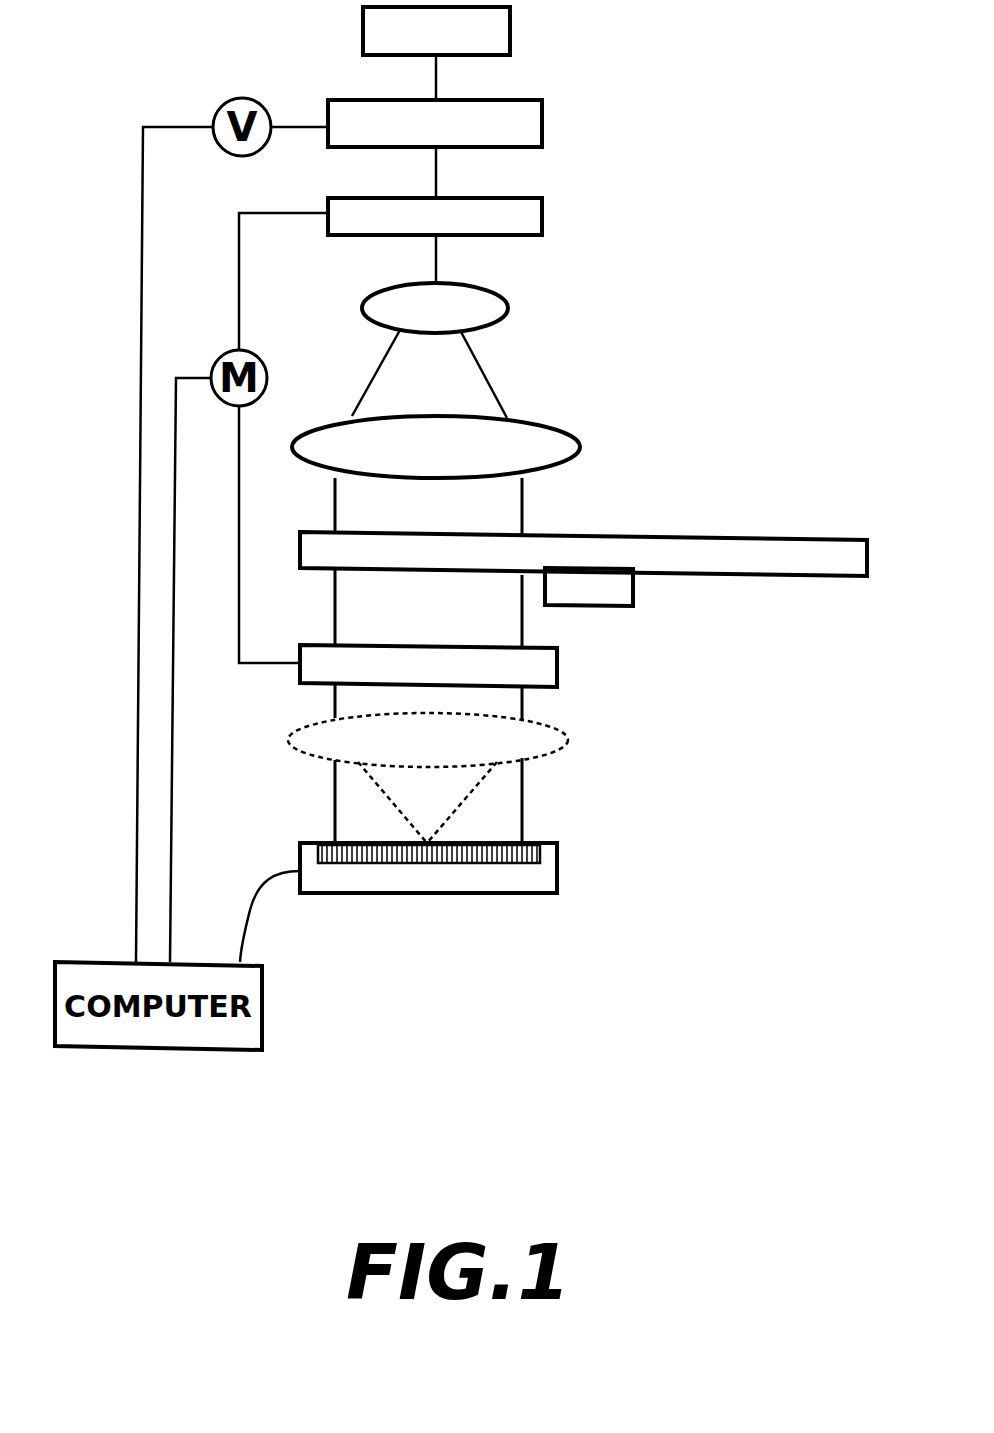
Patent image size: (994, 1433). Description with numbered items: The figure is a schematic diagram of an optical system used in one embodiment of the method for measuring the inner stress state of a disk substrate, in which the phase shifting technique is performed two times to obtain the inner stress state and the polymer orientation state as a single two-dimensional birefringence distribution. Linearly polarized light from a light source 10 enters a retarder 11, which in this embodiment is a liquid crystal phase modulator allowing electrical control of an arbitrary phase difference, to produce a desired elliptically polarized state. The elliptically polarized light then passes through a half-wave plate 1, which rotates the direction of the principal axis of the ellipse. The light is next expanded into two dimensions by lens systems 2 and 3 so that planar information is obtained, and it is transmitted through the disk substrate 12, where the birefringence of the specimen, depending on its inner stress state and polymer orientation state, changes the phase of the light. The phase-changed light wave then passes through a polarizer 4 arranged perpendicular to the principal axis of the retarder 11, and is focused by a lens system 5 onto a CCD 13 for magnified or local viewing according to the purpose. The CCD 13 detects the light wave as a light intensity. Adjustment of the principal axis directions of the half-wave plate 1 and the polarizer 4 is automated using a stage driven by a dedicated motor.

The light source 10 is at (512, 37).
The retarder 11 is at (543, 125).
The half-wave plate 1 is at (543, 215).
The lens system 2 is at (506, 297).
The lens system 3 is at (540, 424).
The disk substrate 12 is at (725, 533).
The polarizer 4 is at (558, 663).
The lens system 5 is at (560, 729).
The CCD 13 is at (557, 843).